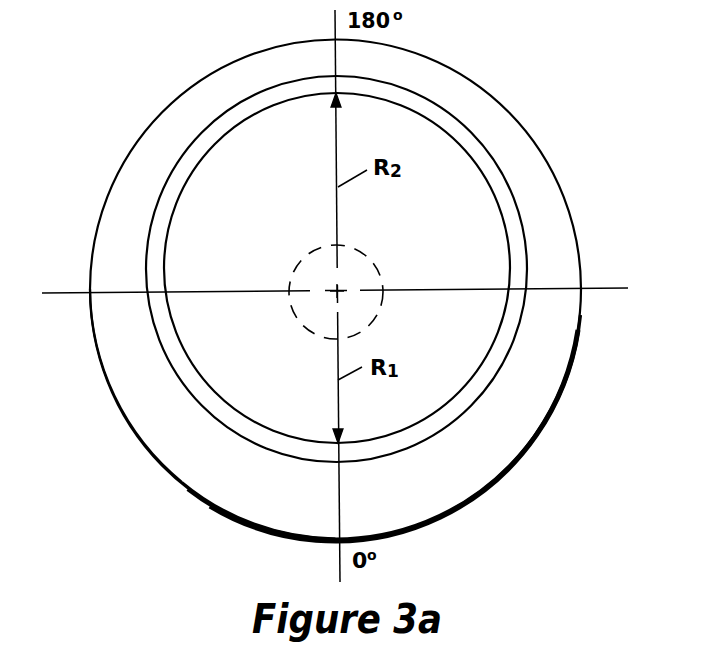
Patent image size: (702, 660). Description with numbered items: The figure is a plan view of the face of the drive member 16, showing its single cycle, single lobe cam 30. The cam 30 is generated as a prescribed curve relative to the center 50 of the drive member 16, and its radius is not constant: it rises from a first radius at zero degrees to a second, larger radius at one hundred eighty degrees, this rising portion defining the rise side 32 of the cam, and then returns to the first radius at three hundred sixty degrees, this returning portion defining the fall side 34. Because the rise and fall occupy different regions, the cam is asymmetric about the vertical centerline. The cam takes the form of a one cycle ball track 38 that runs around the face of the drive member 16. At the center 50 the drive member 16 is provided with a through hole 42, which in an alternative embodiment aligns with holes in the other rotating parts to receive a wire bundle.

The drive member 16 is at (150, 102).
The single cycle cam 30 is at (215, 462).
The rise side 32 is at (153, 398).
The fall side 34 is at (488, 445).
The one cycle ball track 38 is at (505, 153).
The through hole 42 is at (372, 258).
The center 50 is at (334, 290).